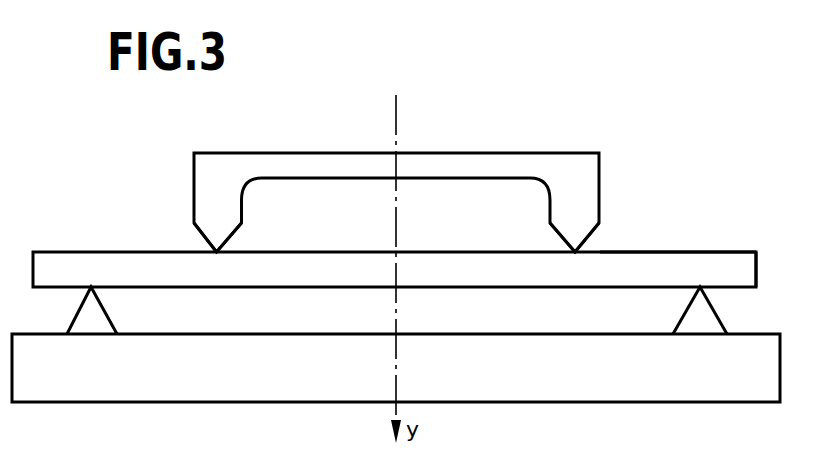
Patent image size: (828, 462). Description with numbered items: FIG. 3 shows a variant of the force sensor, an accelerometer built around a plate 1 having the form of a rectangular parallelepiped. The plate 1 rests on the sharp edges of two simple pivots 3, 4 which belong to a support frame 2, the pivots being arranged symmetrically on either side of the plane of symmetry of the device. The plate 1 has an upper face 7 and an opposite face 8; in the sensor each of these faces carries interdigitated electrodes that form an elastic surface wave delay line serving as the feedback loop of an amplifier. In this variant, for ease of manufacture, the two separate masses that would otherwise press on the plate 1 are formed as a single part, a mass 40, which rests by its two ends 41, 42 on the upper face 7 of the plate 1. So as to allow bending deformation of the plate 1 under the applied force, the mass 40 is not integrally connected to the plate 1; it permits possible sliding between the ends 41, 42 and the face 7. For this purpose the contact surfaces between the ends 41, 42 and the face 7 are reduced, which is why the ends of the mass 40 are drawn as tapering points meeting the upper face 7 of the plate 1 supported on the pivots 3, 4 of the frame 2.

The plate 1 is at (66, 263).
The support frame 2 is at (76, 388).
The simple pivot 3 is at (83, 317).
The simple pivot 4 is at (693, 316).
The upper face 7 is at (704, 262).
The opposite face 8 is at (738, 287).
The mass 40 is at (263, 156).
The end 41 is at (211, 252).
The end 42 is at (574, 252).